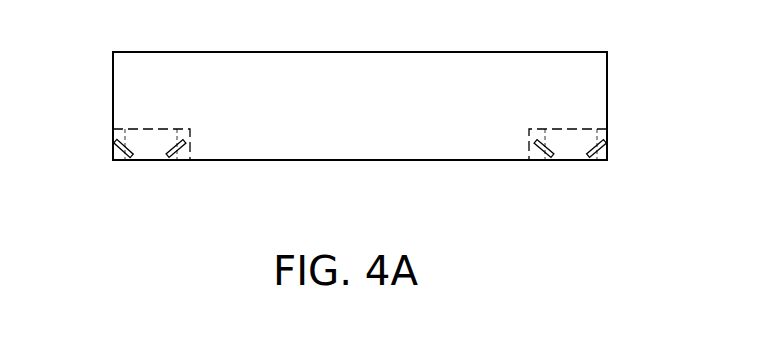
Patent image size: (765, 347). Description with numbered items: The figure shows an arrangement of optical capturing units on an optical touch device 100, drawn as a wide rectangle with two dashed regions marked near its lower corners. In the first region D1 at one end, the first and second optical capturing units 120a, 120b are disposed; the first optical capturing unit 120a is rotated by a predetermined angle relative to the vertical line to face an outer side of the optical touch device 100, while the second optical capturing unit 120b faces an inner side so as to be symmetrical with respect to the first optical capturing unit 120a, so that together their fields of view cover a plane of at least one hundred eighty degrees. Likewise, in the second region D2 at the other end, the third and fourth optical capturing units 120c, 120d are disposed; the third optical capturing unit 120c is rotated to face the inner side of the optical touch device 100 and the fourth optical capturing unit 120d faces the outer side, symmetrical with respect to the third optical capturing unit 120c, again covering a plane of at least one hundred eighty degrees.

The optical touch device 100 is at (546, 52).
The first region D1 is at (113, 142).
The second region D2 is at (605, 135).
The first optical capturing unit 120a is at (114, 162).
The second optical capturing unit 120b is at (167, 162).
The third optical capturing unit 120c is at (540, 162).
The fourth optical capturing unit 120d is at (588, 162).